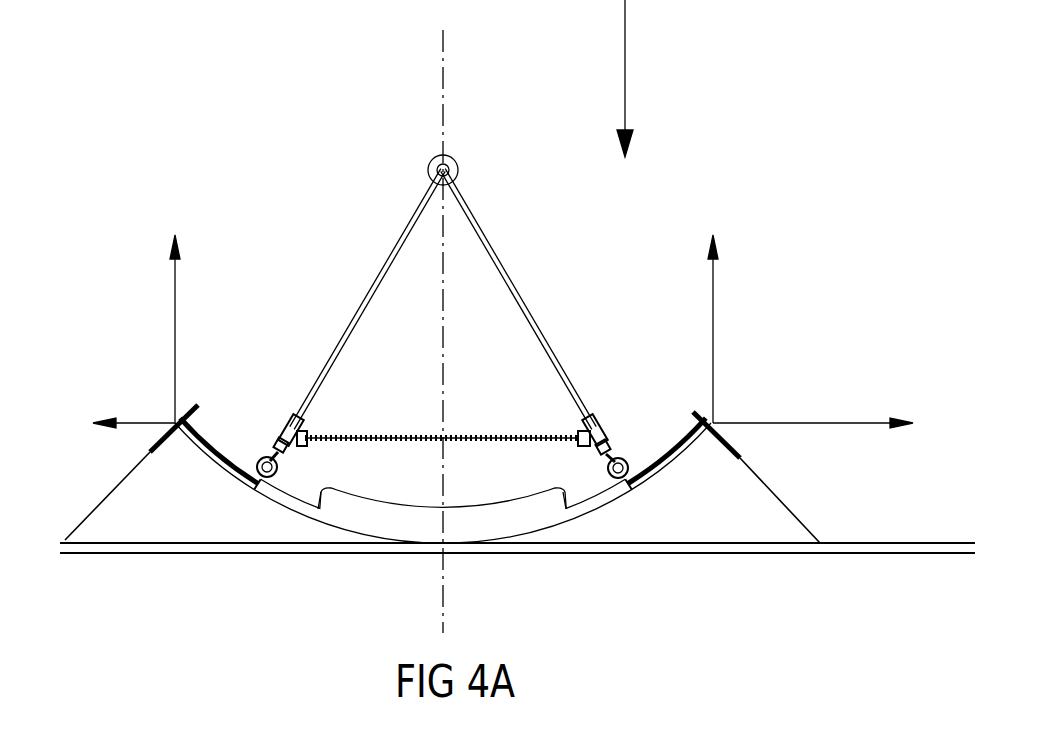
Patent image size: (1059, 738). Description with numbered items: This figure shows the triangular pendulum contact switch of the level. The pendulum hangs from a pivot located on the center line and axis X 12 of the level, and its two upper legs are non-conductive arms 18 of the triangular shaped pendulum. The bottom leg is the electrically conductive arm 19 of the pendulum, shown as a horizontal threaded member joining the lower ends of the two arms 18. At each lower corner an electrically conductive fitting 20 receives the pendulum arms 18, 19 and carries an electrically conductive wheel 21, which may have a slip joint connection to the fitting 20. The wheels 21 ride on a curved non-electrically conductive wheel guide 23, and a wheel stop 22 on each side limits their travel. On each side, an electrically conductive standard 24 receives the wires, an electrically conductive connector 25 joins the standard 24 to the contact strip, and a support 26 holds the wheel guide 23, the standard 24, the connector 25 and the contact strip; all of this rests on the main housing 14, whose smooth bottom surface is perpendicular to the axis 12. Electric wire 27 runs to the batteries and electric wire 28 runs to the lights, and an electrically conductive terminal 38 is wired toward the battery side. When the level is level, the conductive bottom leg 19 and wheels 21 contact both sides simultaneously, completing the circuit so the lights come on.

The center line and axis X 12 is at (446, 73).
The main housing 14 is at (850, 548).
The arm of triangular shaped pendulum 18 is at (375, 278).
The electrically conductive arm 19 is at (425, 437).
The electrically conductive fitting 20 is at (288, 425).
The electrically conductive wheel 21 is at (263, 457).
The wheel stop 22 is at (320, 495).
The wheel guide 23 is at (442, 522).
The electrically conductive standard 24 is at (170, 437).
The electrically conductive connector 25 is at (237, 483).
The support 26 is at (167, 493).
The electric wire to battery 27 is at (713, 350).
The electric wire to lights 28 is at (175, 307).
The electrically conductive terminal 38 is at (260, 483).